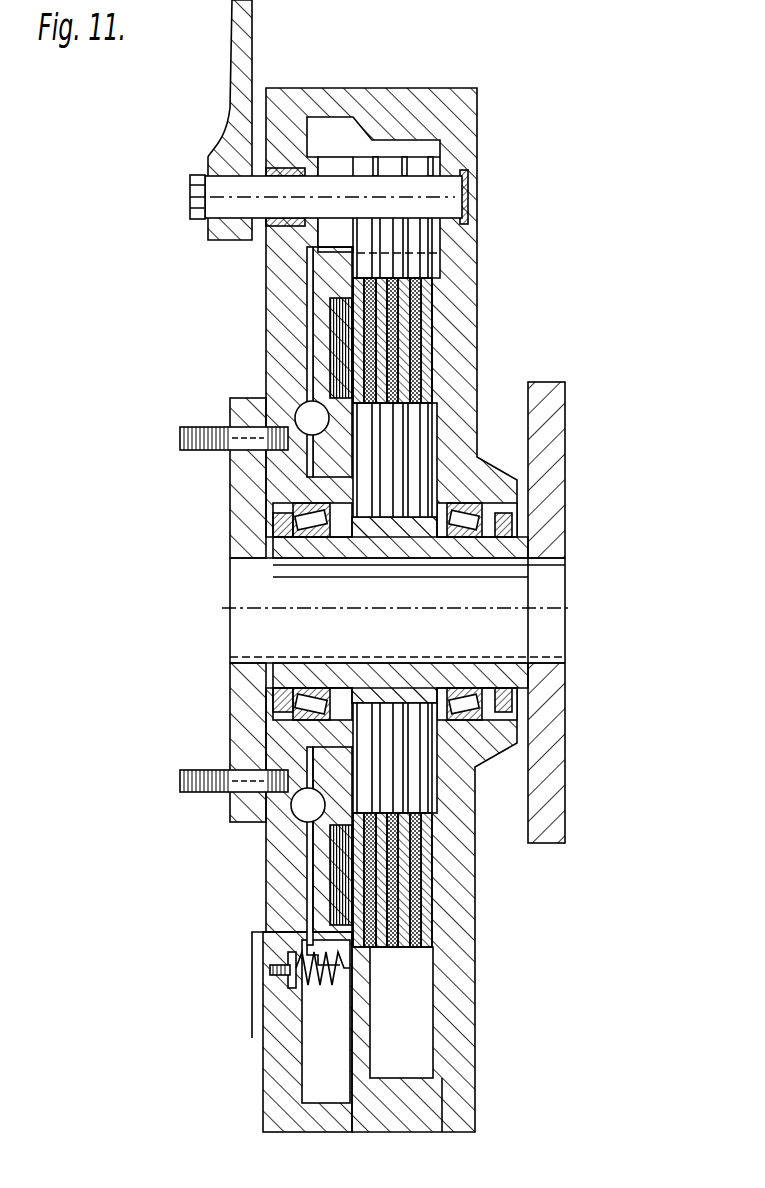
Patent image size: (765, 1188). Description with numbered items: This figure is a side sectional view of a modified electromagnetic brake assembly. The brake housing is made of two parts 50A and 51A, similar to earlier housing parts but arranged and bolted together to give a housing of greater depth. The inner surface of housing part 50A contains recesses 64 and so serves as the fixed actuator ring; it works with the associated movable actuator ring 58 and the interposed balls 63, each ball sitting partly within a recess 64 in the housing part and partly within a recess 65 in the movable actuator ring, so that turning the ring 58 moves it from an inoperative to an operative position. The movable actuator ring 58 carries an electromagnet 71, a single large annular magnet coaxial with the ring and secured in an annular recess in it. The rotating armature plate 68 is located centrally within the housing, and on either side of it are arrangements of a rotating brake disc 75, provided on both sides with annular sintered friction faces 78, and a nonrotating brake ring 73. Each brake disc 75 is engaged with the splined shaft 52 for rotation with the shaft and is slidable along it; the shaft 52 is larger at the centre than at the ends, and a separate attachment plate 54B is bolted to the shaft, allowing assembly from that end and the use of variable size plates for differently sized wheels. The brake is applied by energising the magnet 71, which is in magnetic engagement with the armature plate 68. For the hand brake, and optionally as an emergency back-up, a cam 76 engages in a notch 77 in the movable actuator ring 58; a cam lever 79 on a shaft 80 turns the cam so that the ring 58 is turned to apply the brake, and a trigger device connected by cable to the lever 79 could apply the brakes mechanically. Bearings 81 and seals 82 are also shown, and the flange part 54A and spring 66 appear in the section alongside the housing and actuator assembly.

The cam lever 79 is at (253, 42).
The shaft 80 is at (283, 190).
The cam 76 is at (345, 182).
The brake ring 73 is at (408, 248).
The notch 77 is at (340, 250).
The movable actuator ring 58 is at (330, 283).
The electromagnet 71 is at (338, 338).
The balls 63 is at (308, 412).
The friction faces 78 is at (413, 346).
The armature plate 68 is at (357, 375).
The attachment plate 54B is at (558, 430).
The brake disc 75 is at (393, 520).
The bearings 81 is at (467, 535).
The shaft 52 is at (381, 648).
The flange 54A is at (237, 717).
The seals 82 is at (515, 700).
The recess 65 is at (327, 797).
The recess 64 is at (330, 832).
The housing part 51A is at (467, 972).
The spring 66 is at (327, 990).
The housing part 50A is at (270, 1080).